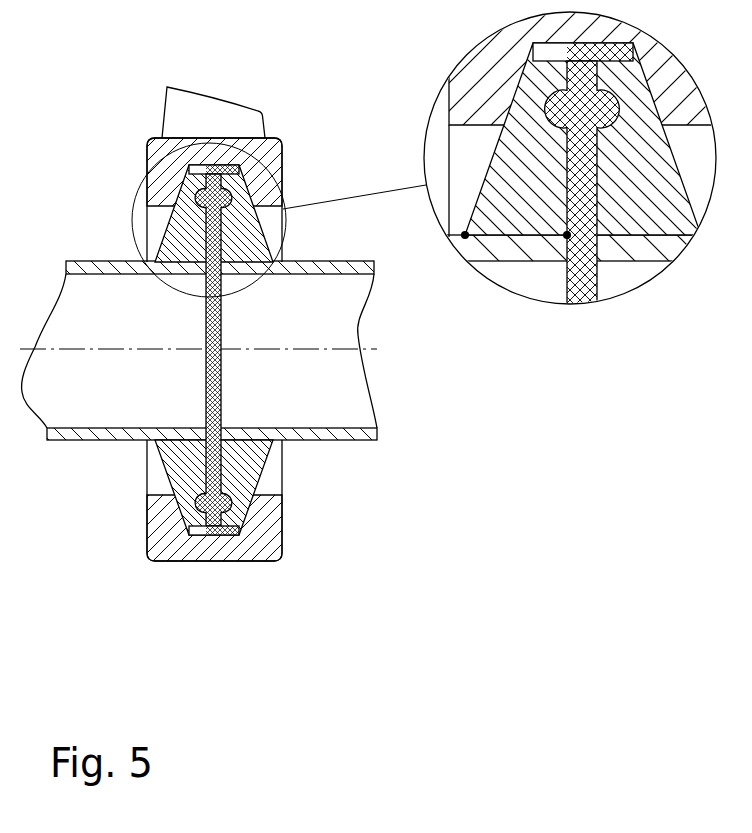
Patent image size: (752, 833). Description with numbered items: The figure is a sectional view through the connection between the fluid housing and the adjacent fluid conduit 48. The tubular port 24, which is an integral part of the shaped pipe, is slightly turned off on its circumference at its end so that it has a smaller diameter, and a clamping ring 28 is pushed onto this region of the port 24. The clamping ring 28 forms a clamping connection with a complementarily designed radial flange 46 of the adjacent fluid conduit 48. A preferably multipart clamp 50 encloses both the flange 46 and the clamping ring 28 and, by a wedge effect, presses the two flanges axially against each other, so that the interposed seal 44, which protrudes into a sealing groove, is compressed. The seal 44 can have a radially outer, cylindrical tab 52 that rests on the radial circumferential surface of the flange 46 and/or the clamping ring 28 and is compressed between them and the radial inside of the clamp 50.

The tubular port 24 is at (95, 441).
The clamping ring 28 is at (148, 232).
The seal 44 is at (222, 466).
The radial flange 46 is at (264, 460).
The fluid conduit 48 is at (377, 428).
The clamp 50 is at (188, 562).
The cylindrical tab 52 is at (238, 537).